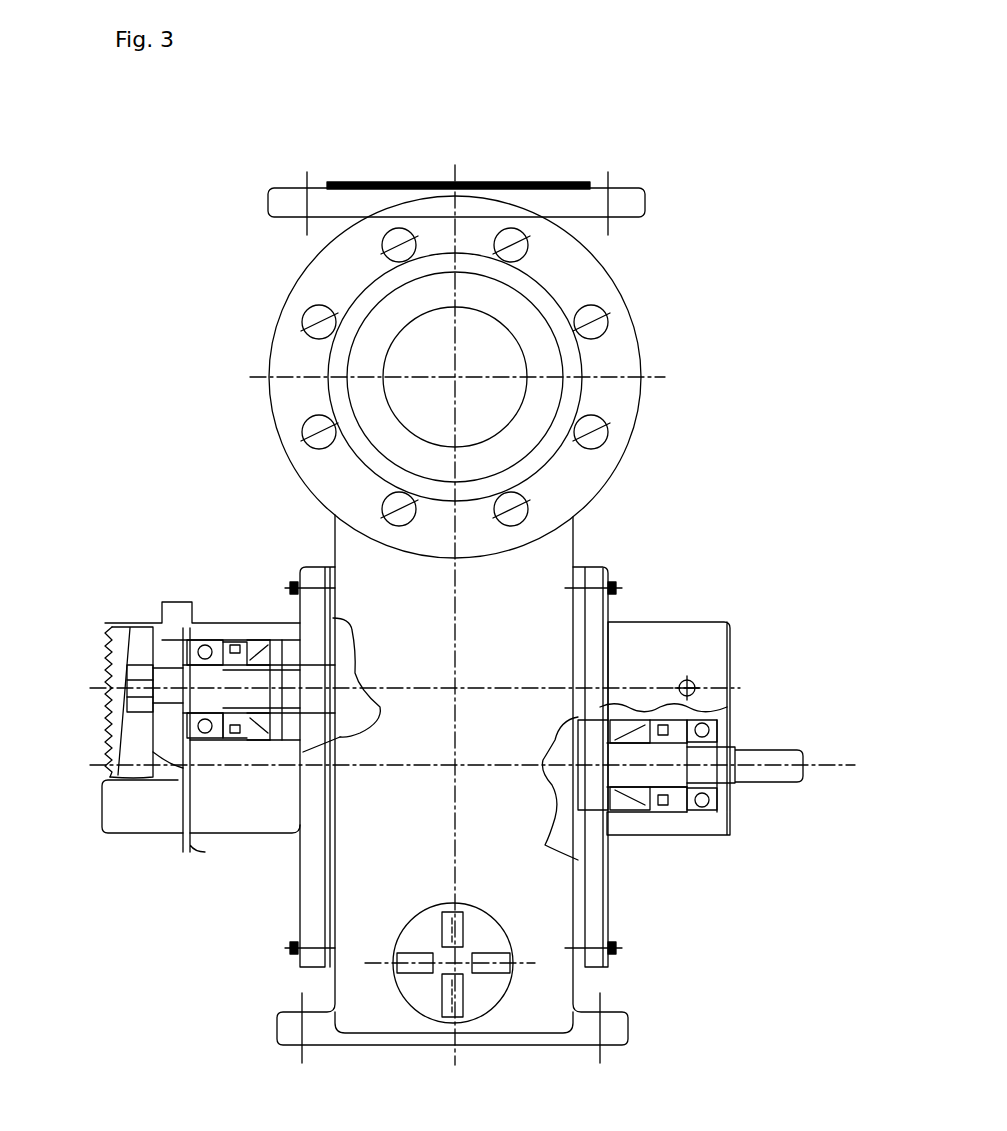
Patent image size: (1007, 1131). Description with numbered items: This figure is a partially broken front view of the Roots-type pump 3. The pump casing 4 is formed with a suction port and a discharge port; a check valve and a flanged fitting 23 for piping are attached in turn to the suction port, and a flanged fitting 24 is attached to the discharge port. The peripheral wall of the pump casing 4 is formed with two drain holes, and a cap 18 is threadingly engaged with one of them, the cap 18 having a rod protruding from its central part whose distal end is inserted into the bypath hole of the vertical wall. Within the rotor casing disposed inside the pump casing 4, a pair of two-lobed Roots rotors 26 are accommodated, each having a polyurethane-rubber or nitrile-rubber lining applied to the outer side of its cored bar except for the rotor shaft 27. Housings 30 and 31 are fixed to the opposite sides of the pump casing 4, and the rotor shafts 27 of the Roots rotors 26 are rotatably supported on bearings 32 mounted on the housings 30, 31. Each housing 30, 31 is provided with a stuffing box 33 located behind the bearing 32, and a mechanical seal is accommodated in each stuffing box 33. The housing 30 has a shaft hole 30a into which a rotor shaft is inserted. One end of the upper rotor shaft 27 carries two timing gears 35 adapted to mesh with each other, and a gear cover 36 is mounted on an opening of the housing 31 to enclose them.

The Roots-type pump 3 is at (663, 202).
The pump casing 4 is at (550, 962).
The cap 18 is at (477, 1000).
The flanged fitting 23 is at (632, 422).
The flanged fitting 24 is at (538, 195).
The two-lobed Roots rotors 26 is at (565, 808).
The rotor shaft 27 is at (273, 675).
The housing 30 is at (688, 633).
The shaft hole 30a is at (590, 713).
The housing 31 is at (206, 628).
The bearing 32 is at (183, 640).
The stuffing box 33 is at (625, 813).
The timing gears 35 is at (160, 645).
The gear cover 36 is at (115, 655).